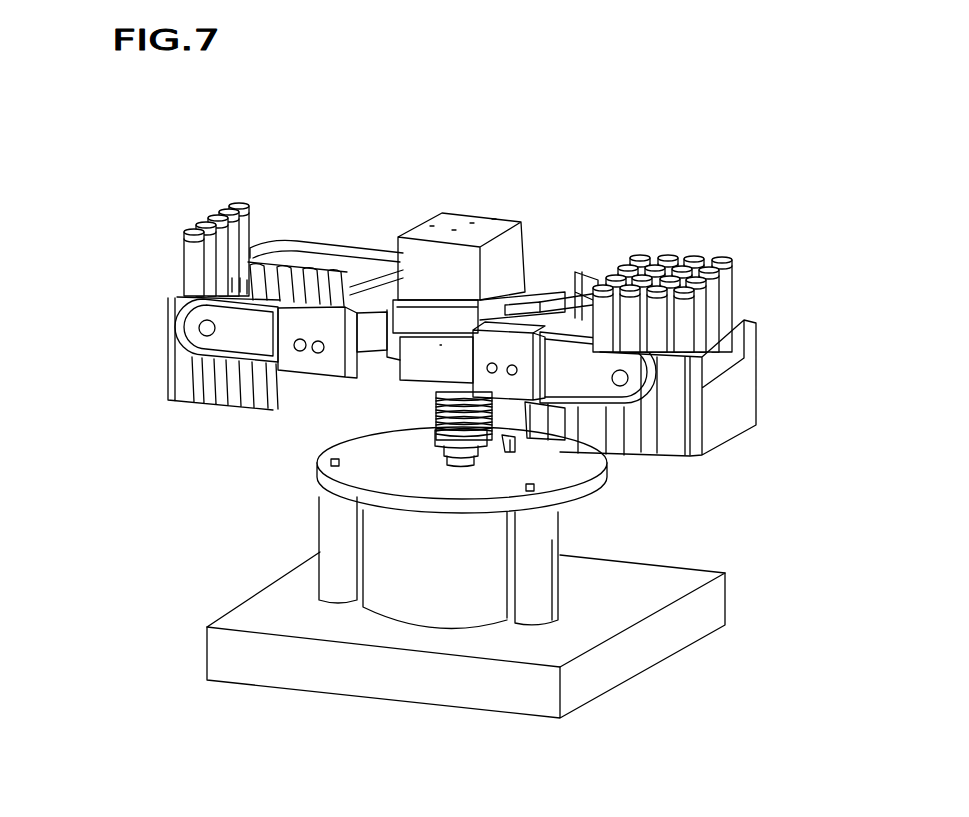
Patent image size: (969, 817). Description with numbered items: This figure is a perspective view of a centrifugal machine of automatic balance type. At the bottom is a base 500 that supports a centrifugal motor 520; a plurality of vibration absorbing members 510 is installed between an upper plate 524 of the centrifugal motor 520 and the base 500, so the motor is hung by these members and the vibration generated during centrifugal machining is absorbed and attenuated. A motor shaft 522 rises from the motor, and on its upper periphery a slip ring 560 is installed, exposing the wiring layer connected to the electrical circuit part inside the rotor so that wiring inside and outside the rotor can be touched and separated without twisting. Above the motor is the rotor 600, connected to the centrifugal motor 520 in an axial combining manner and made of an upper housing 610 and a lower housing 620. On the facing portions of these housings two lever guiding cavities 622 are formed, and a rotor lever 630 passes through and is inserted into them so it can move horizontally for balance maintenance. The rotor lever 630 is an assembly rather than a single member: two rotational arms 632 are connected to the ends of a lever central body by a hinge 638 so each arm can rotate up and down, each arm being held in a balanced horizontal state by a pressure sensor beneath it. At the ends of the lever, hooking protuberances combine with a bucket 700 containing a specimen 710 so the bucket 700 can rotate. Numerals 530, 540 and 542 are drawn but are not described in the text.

The base 500 is at (227, 660).
The vibration absorbing member 510 is at (540, 583).
The centrifugal motor 520 is at (437, 597).
The motor shaft 522 is at (603, 475).
The upper plate 524 is at (363, 475).
The collar nut 530 is at (495, 438).
The right tray holder 540 is at (642, 438).
The gripper block 542 is at (540, 445).
The slip ring 560 is at (425, 405).
The rotor 600 is at (539, 190).
The upper housing 610 is at (445, 215).
The lower housing 620 is at (413, 365).
The lever guiding cavity 622 is at (540, 305).
The rotor lever 630 is at (313, 243).
The rotational arm 632 is at (178, 300).
The hinge 638 is at (610, 243).
The bucket 700 is at (182, 388).
The specimen 710 is at (728, 262).